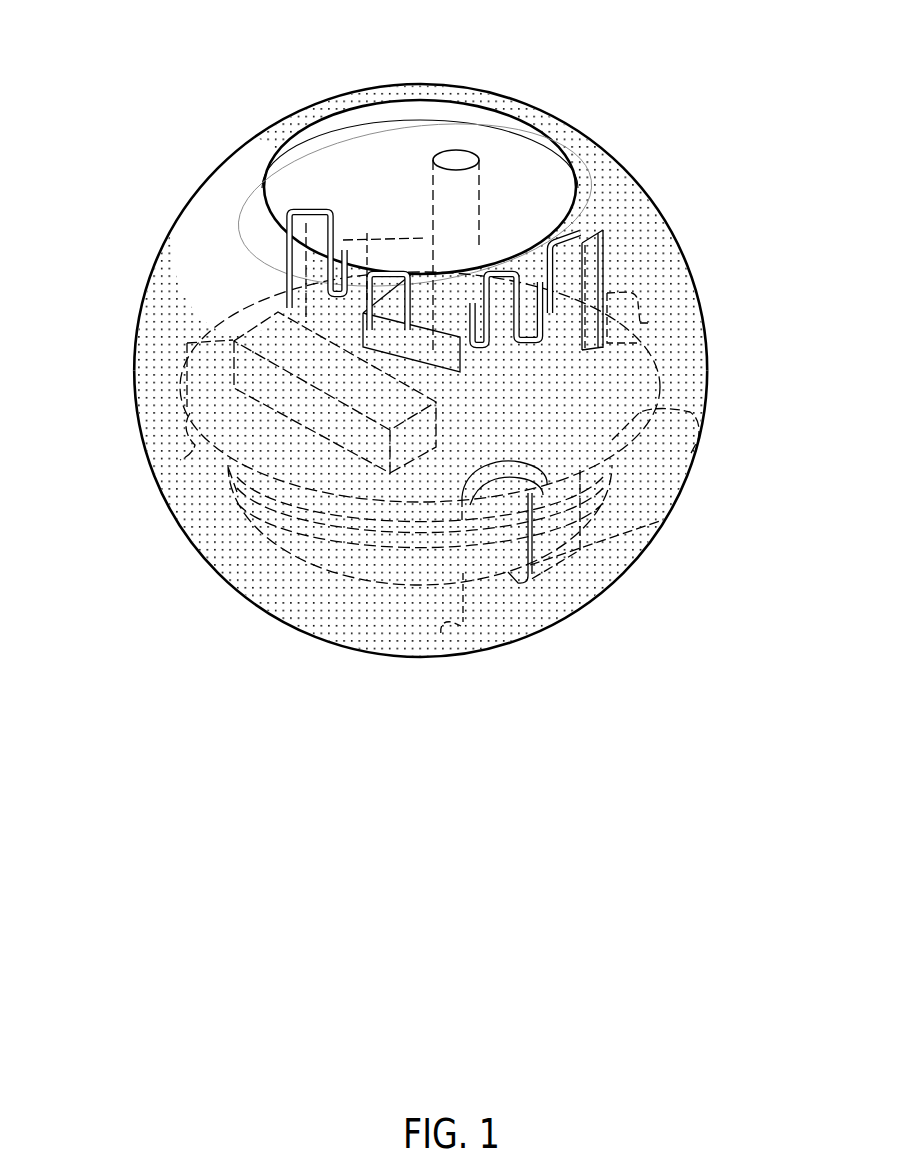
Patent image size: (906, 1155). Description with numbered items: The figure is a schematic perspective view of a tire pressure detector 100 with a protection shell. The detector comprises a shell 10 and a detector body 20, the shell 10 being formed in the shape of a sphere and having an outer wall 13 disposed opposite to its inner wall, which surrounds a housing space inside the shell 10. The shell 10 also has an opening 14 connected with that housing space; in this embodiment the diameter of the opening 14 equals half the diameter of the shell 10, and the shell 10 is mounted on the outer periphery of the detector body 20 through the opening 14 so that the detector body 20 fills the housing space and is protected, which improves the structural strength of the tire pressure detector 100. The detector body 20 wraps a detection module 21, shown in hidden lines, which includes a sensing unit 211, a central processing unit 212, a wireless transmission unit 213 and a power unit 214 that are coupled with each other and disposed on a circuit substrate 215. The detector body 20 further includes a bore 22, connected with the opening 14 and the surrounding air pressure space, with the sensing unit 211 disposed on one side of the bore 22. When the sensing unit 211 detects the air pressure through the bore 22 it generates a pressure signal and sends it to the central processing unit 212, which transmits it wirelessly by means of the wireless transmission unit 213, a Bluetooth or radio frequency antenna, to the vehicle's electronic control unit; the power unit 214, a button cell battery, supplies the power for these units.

The tire pressure detector 100 is at (134, 31).
The shell 10 is at (578, 113).
The outer wall 13 is at (660, 533).
The opening 14 is at (317, 130).
The bore 22 is at (454, 157).
The detector body 20 is at (177, 363).
The detection module 21 is at (598, 230).
The sensing unit 211 is at (650, 323).
The central processing unit 212 is at (258, 392).
The wireless transmission unit 213 is at (367, 233).
The power unit 214 is at (441, 635).
The circuit substrate 215 is at (690, 453).